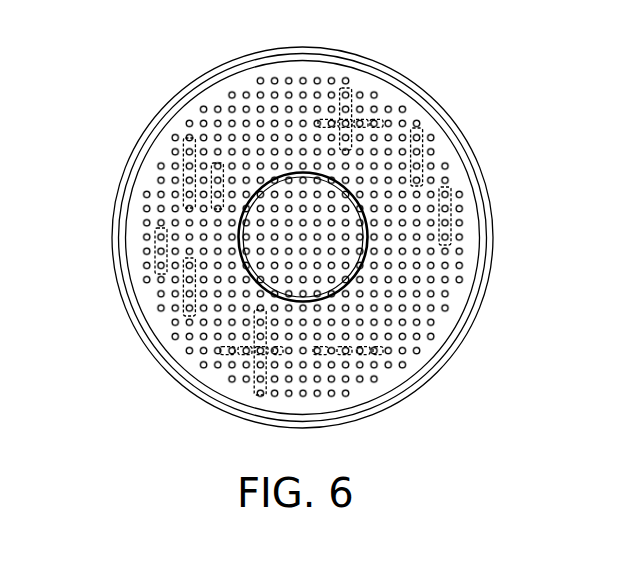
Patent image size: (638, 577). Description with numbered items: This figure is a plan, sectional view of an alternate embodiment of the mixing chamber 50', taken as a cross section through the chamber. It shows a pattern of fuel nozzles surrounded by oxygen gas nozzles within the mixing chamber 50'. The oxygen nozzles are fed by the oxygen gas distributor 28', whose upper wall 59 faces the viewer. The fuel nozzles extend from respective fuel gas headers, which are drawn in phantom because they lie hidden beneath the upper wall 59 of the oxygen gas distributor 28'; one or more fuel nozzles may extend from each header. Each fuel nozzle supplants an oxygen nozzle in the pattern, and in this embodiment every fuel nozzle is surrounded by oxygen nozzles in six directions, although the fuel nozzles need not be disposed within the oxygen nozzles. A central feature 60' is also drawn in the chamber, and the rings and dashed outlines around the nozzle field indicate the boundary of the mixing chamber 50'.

The oxygen gas distributor 28' is at (291, 237).
The mixing chamber 50' is at (302, 237).
The upper wall 59 is at (292, 67).
The central opening 60' is at (300, 158).